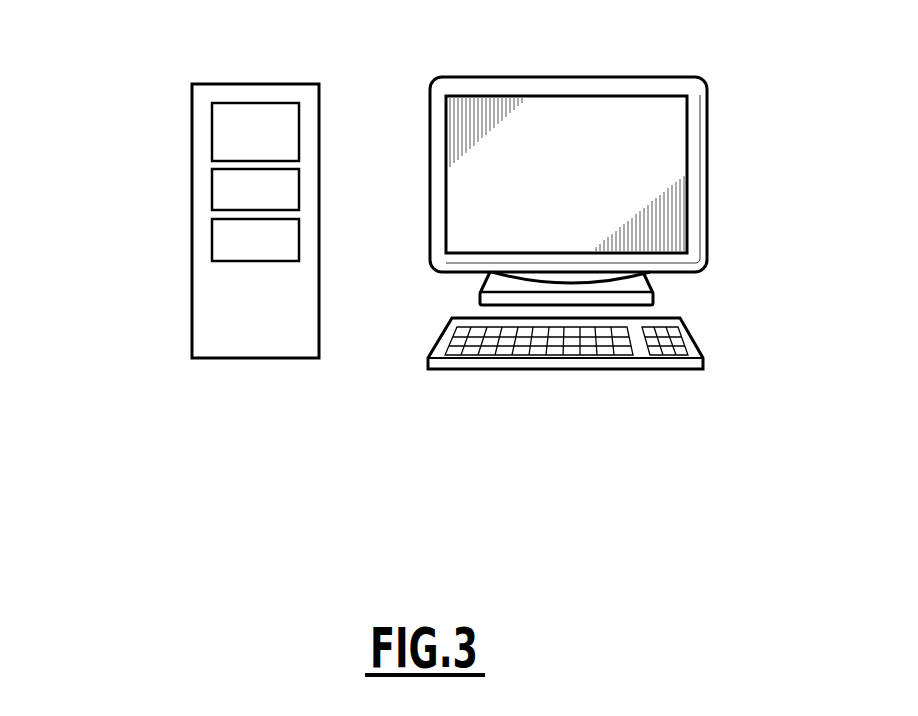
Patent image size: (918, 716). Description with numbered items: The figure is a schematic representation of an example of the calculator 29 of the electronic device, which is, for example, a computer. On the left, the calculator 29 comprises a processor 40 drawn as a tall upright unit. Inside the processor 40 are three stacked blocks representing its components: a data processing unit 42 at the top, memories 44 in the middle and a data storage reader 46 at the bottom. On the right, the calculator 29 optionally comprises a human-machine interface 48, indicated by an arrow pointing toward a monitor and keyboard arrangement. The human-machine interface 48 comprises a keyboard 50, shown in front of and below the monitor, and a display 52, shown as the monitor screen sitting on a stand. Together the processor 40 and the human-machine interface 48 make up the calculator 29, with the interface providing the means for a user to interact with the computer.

The calculator 29 is at (228, 412).
The processor 40 is at (197, 337).
The data processing unit 42 is at (299, 132).
The memories 44 is at (299, 190).
The data storage reader 46 is at (299, 240).
The human-machine interface 48 is at (750, 268).
The keyboard 50 is at (703, 330).
The display 52 is at (697, 172).